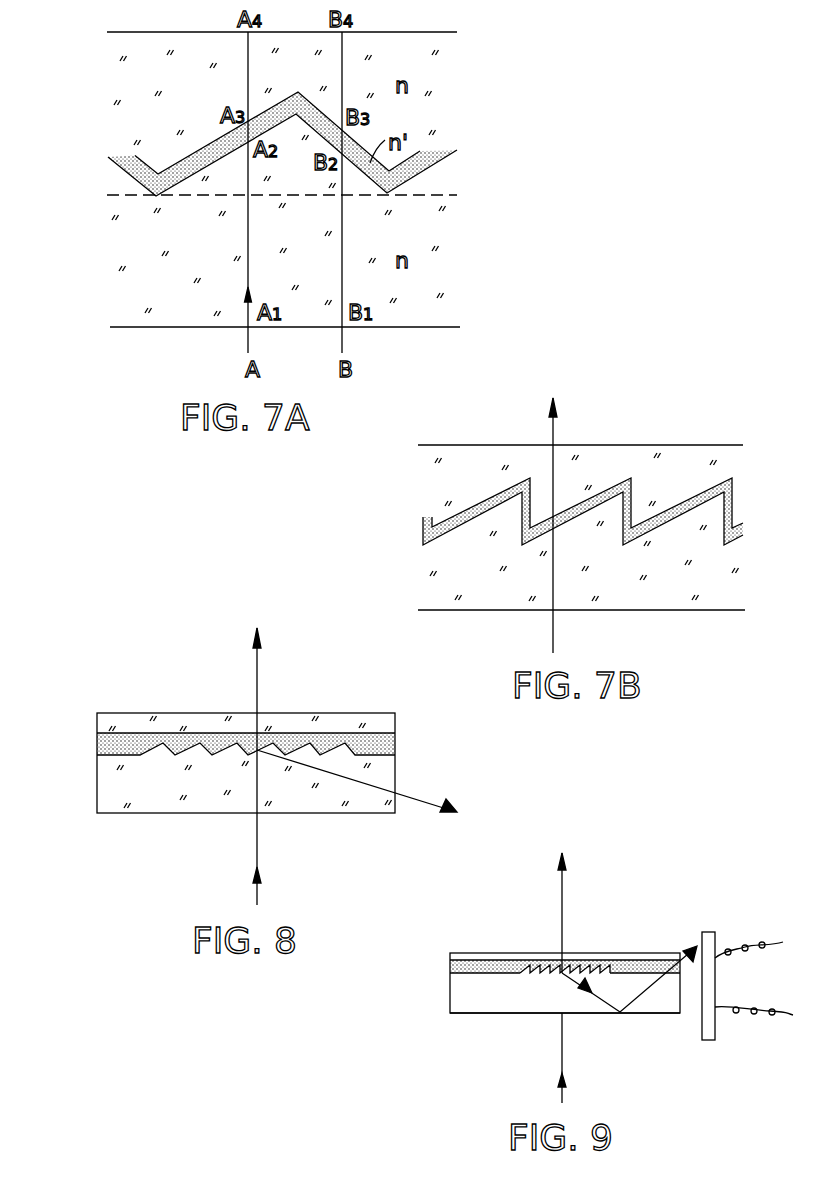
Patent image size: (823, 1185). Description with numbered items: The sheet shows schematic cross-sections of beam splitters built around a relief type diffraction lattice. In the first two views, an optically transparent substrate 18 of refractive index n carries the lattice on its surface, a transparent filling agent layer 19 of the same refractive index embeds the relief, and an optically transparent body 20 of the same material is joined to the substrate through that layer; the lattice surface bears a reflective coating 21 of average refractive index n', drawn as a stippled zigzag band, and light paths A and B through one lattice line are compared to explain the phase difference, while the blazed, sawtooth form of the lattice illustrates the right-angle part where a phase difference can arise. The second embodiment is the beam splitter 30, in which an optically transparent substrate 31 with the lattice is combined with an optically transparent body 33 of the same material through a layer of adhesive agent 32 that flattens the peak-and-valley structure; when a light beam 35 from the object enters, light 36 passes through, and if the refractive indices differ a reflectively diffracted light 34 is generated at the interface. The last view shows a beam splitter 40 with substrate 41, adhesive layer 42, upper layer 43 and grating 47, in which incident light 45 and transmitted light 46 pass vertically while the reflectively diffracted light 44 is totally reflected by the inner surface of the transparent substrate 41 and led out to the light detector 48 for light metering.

In FIG. 7A, the optically transparent substrate 18 is at (101, 172).
In FIG. 7B, the optically transparent substrate 18 is at (416, 553).
In FIG. 7A, the transparent filling agent layer 19 is at (101, 32).
In FIG. 7B, the transparent filling agent layer 19 is at (416, 445).
In FIG. 7B, the optically transparent body 20 is at (425, 535).
In FIG. 7A, the reflective coating 21 is at (125, 155).
In FIG. 8, the beam splitter 30 is at (63, 723).
In FIG. 8, the optically transparent substrate 31 is at (227, 789).
In FIG. 8, the layer of adhesive agent 32 is at (229, 758).
In FIG. 8, the optically transparent body 33 is at (229, 733).
In FIG. 8, the reflectively diffracted light 34 is at (372, 787).
In FIG. 8, the light beam from the object 35 is at (257, 890).
In FIG. 8, the transmitted beam 36 is at (257, 663).
In FIG. 9, the optical device 40 is at (408, 948).
In FIG. 9, the transparent substrate 41 is at (455, 998).
In FIG. 9, the grating layer 42 is at (450, 968).
In FIG. 9, the top layer 43 is at (458, 957).
In FIG. 9, the reflectively diffracted light 44 is at (602, 997).
In FIG. 9, the incident beam 45 is at (562, 1090).
In FIG. 9, the transmitted beam 46 is at (562, 883).
In FIG. 9, the grating 47 is at (607, 965).
In FIG. 9, the light detector 48 is at (710, 930).